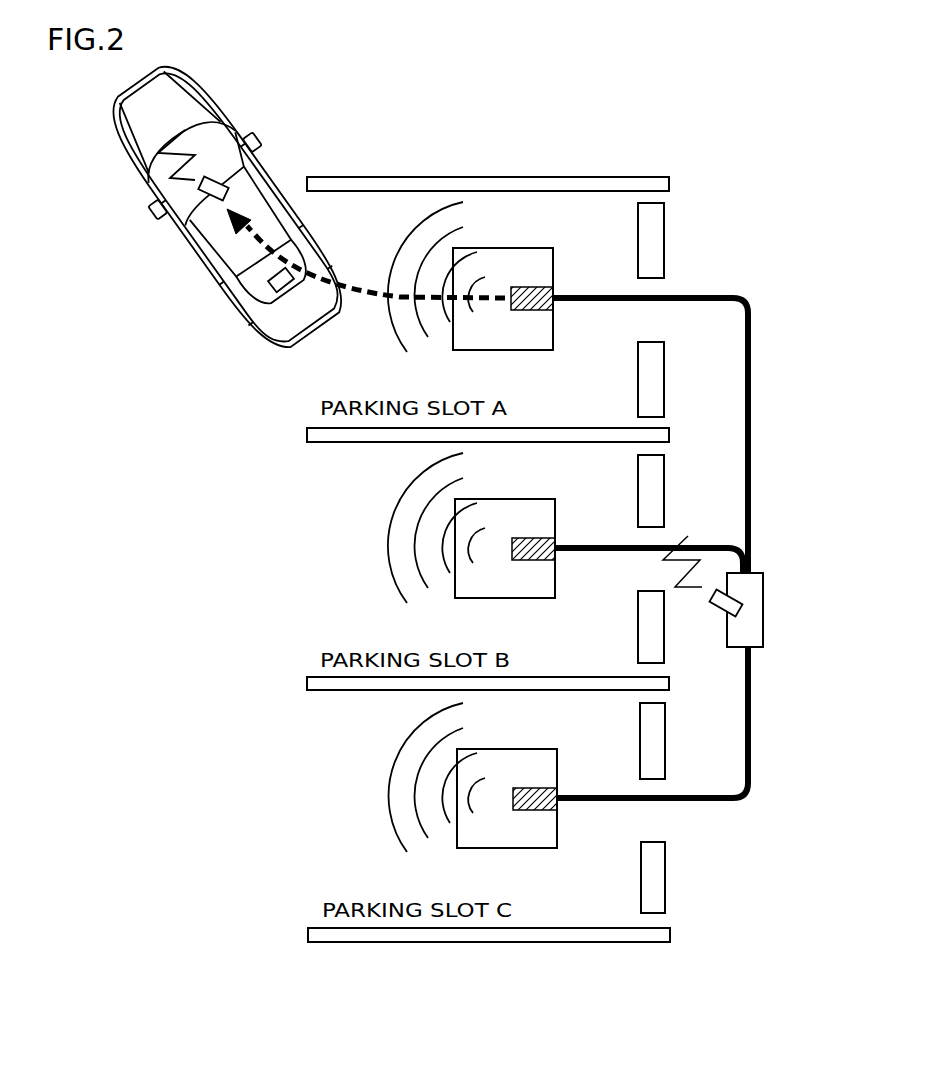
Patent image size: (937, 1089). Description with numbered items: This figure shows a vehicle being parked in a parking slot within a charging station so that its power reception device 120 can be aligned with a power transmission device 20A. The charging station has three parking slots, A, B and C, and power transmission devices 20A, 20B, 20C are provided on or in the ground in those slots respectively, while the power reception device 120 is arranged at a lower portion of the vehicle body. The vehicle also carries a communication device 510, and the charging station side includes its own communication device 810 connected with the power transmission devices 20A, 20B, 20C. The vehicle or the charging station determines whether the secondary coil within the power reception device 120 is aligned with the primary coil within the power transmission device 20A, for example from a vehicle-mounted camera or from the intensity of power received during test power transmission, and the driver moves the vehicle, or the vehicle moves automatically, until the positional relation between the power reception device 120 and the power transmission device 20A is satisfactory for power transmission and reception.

The power transmission device 20A is at (530, 287).
The power transmission device 20B is at (530, 538).
The power transmission device 20C is at (532, 788).
The communication device 510 is at (210, 201).
The power reception device 120 is at (264, 290).
The communication device 810 is at (720, 615).